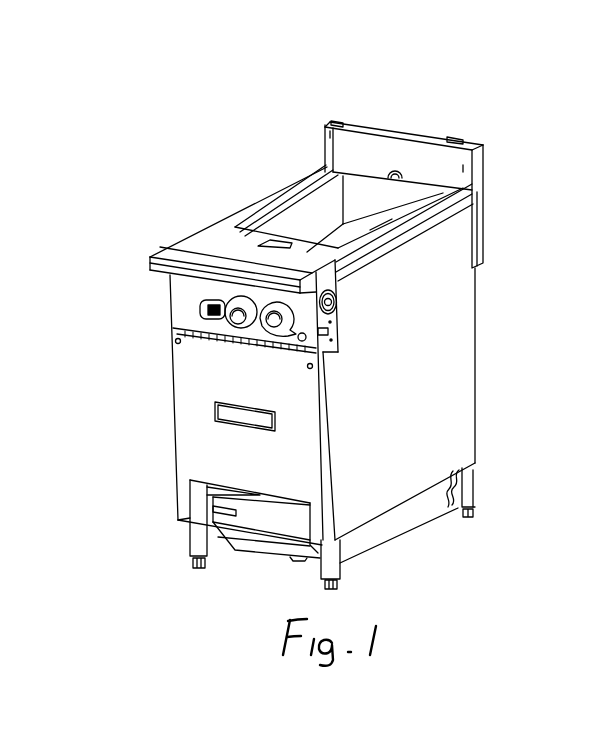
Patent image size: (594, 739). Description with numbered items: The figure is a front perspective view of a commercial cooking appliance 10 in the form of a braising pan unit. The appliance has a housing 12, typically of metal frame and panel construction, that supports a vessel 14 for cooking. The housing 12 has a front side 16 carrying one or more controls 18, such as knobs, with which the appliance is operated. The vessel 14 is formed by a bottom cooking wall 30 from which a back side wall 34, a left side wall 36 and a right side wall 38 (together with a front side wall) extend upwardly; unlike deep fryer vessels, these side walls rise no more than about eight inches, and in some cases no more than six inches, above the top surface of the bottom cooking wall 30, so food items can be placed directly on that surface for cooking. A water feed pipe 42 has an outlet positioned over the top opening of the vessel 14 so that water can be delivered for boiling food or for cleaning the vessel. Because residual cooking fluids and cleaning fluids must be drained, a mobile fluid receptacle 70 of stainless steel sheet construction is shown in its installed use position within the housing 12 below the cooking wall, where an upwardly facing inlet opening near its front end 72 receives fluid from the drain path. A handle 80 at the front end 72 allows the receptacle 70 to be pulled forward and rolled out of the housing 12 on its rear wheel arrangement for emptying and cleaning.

The commercial cooking appliance 10 is at (466, 82).
The housing 12 is at (470, 324).
The vessel 14 is at (314, 212).
The front side 16 is at (173, 308).
The controls 18 is at (232, 320).
The bottom cooking wall 30 is at (340, 233).
The back side wall 34 is at (358, 193).
The left side wall 36 is at (283, 223).
The right side wall 38 is at (378, 220).
The water feed pipe 42 is at (399, 170).
The mobile fluid receptacle 70 is at (247, 556).
The front end 72 is at (235, 513).
The handle 80 is at (283, 535).